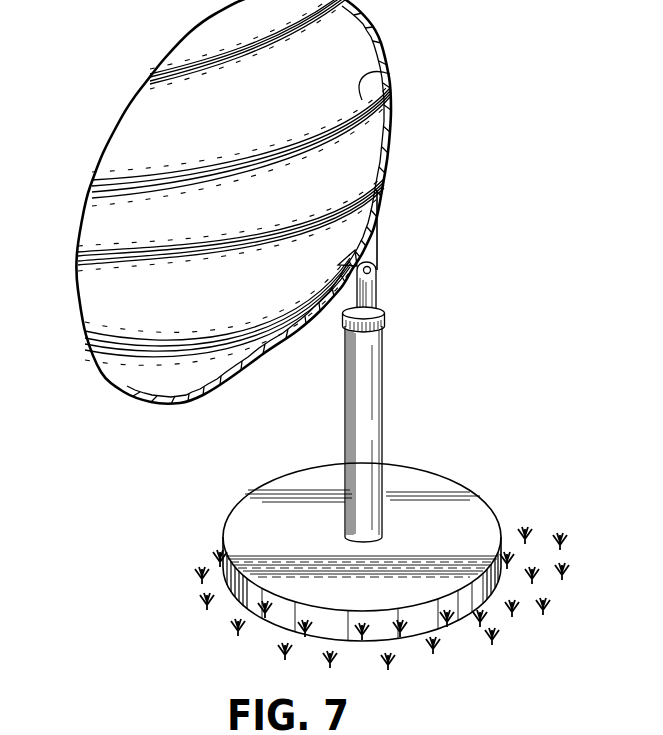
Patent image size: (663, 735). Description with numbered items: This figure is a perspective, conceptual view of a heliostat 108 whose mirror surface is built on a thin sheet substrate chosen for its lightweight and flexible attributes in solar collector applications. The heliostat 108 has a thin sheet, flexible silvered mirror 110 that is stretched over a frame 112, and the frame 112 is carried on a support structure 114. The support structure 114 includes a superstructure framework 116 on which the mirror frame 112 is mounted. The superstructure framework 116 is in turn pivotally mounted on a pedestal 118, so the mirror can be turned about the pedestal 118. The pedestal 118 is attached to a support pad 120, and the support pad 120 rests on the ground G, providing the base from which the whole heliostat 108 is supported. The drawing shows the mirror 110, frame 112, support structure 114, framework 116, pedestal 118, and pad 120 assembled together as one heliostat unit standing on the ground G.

The heliostat 108 is at (142, 84).
The flexible silvered mirror 110 is at (390, 72).
The frame 112 is at (393, 116).
The support structure 114 is at (382, 303).
The superstructure framework 116 is at (379, 243).
The pedestal 118 is at (384, 372).
The support pad 120 is at (418, 470).
The ground G is at (543, 546).